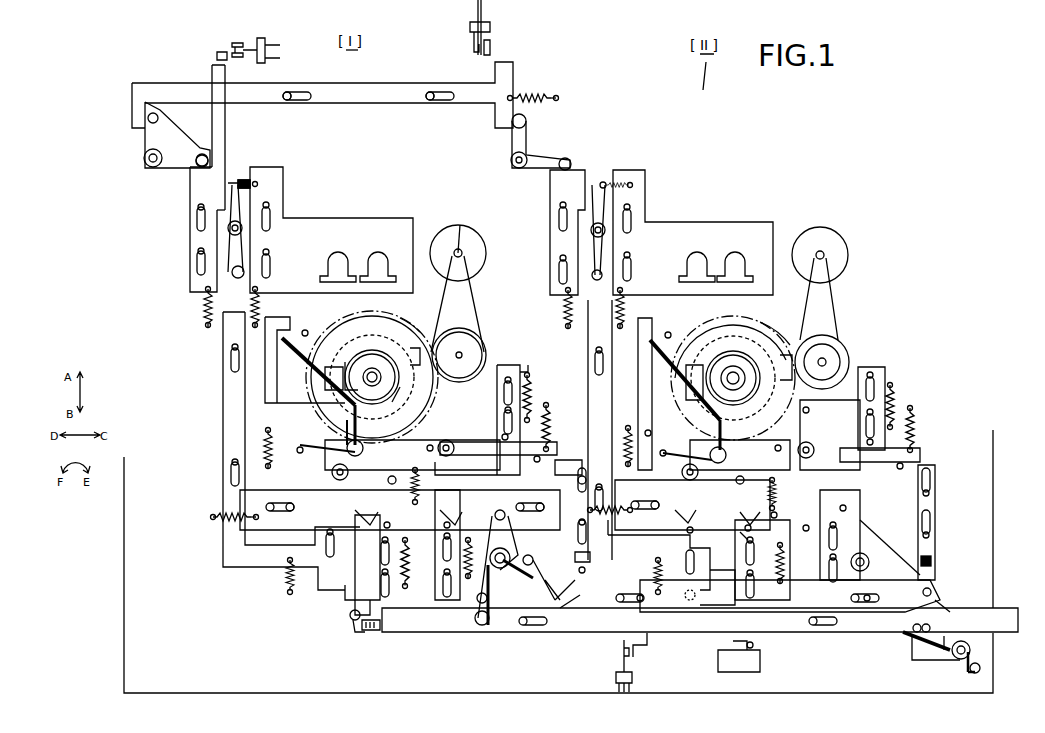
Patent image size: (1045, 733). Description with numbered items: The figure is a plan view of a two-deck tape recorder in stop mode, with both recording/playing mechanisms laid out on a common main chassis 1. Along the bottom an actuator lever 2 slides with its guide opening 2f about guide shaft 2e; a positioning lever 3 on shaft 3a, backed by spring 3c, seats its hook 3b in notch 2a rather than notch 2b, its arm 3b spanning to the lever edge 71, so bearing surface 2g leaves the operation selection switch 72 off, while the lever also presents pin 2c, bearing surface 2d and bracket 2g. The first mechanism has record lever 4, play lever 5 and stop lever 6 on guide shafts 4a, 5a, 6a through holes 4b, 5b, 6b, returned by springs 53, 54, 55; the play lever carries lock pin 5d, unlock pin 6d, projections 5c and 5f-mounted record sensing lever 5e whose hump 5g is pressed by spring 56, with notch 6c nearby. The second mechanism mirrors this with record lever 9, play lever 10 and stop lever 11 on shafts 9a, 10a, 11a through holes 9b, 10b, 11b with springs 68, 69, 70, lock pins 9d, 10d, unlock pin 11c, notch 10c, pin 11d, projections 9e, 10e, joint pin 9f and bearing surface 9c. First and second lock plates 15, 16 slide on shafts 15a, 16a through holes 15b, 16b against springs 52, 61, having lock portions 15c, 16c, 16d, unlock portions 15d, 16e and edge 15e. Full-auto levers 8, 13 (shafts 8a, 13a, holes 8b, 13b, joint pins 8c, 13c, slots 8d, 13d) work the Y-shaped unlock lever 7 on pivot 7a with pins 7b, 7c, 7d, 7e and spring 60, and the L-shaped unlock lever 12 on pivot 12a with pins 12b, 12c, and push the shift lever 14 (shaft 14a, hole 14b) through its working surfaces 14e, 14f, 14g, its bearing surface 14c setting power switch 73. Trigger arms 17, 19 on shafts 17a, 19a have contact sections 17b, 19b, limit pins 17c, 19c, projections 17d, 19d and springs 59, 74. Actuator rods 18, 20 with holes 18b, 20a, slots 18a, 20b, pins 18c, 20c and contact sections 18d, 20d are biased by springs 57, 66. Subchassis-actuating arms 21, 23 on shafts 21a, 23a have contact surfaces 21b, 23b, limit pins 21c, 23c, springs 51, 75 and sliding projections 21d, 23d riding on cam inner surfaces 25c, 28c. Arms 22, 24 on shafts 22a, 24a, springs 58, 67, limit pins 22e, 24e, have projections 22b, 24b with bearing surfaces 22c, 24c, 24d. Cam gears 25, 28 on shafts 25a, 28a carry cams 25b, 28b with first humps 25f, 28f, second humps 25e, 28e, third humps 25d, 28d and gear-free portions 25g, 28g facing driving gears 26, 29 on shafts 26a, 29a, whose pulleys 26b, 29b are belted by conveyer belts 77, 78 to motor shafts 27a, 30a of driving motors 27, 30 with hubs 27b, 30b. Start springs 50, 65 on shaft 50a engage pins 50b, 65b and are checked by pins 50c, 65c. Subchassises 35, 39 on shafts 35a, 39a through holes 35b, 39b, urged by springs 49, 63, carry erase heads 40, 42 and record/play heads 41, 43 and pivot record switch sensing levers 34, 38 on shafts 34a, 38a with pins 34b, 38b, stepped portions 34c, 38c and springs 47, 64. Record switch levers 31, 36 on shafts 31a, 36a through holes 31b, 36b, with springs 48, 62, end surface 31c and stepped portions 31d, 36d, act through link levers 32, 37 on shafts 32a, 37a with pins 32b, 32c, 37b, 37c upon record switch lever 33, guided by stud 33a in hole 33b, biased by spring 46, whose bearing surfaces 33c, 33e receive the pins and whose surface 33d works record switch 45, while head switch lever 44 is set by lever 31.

The frame 1 is at (993, 497).
The slide bar 2 is at (1010, 608).
The pin 2a is at (922, 625).
The pin 2b is at (930, 625).
The roller 2c is at (482, 625).
The pin 2d is at (356, 622).
The pin 2e is at (524, 625).
The slot 2f is at (543, 625).
The bracket 2g is at (647, 642).
The lever bracket 3 is at (930, 660).
The roller 3a is at (958, 658).
The arm 3b is at (913, 656).
The pin 3c is at (981, 666).
The slide plate 4 is at (223, 421).
The pin 4a is at (330, 530).
The slot 4b is at (231, 359).
The slide plate 5 is at (400, 590).
The pin 5a is at (371, 552).
The slot 5b is at (372, 567).
The projection 5c is at (363, 579).
The pin 5d is at (384, 525).
The arm 5e is at (345, 596).
The projection 5f is at (362, 556).
The arm 5g is at (355, 610).
The slide plate 6 is at (440, 600).
The pin 6a is at (444, 535).
The slot 6b is at (443, 548).
The notch 6c is at (680, 519).
The pin 6d is at (451, 525).
The lever 7 is at (498, 572).
The pivot 7a is at (511, 559).
The pin 7b is at (491, 516).
The roller 7c is at (478, 602).
The pin 7d is at (534, 552).
The arm 7e is at (554, 580).
The bracket 8 is at (566, 460).
The pin 8a is at (573, 504).
The slot 8b is at (573, 509).
The pin 8c is at (575, 573).
The block 8d is at (576, 559).
The slide plate 9 is at (606, 378).
The pin 9a is at (595, 350).
The slot 9b is at (595, 364).
The end 9c is at (590, 288).
The arm 9d is at (690, 526).
The arm 9e is at (717, 587).
The pin 9f is at (690, 600).
The slide plate 10 is at (735, 590).
The pin 10a is at (765, 548).
The slot 10b is at (746, 556).
The notch 10c is at (748, 525).
The pin 10d is at (731, 535).
The projection 10e is at (726, 548).
The slide plate 11 is at (840, 531).
The pin 11a is at (838, 524).
The slot 11b is at (829, 574).
The notch 11c is at (871, 498).
The pin 11d is at (803, 528).
The lever 12 is at (890, 547).
The pivot 12a is at (872, 556).
The pin 12b is at (843, 516).
The end 12c is at (918, 555).
The slide plate 13 is at (936, 512).
The pin 13a is at (930, 493).
The slot 13b is at (931, 478).
The pin 13c is at (932, 588).
The block 13d is at (932, 560).
The slide plate 14 is at (900, 600).
The pin 14a is at (640, 594).
The slot 14b is at (618, 594).
The pin 14c is at (755, 645).
The arm 14e is at (558, 599).
The arm 14f is at (950, 594).
The edge 14g is at (705, 600).
The slide plate 15 is at (483, 505).
The pin 15a is at (293, 503).
The slot 15b is at (272, 503).
The notch 15c is at (364, 514).
The notch 15d is at (436, 517).
The edge 15e is at (509, 487).
The slide plate 16 is at (698, 503).
The pin 16a is at (658, 500).
The slot 16b is at (640, 500).
The notch 16c is at (675, 522).
The notch 16d is at (740, 514).
The pin 16e is at (787, 519).
The slide plate 17 is at (396, 470).
The roller 17a is at (345, 478).
The pin 17b is at (381, 484).
The pin 17c is at (423, 453).
The arm 17d is at (328, 367).
The slide plate 18 is at (500, 365).
The pin 18a is at (509, 376).
The slot 18b is at (504, 392).
The pin 18c is at (501, 437).
The arm 18d is at (455, 452).
The slide plate 19 is at (742, 470).
The roller 19a is at (682, 472).
The pin 19b is at (731, 485).
The pin 19c is at (774, 453).
The arm 19d is at (696, 369).
The slide plate 20 is at (906, 367).
The pin 20a is at (874, 373).
The slot 20b is at (866, 424).
The pin 20c is at (866, 443).
The base 20d is at (840, 458).
The lever 21 is at (290, 415).
The arm 21a is at (471, 405).
The end 21b is at (300, 315).
The link 21c is at (316, 445).
The arm 21d is at (353, 431).
The slide plate 22 is at (470, 455).
The roller 22a is at (442, 453).
The arm 22b is at (432, 390).
The notch 22c is at (415, 351).
The pin 22e is at (537, 466).
The lever 23 is at (652, 395).
The arm 23a is at (837, 405).
The end 23b is at (640, 320).
The pin 23c is at (661, 432).
The arm 23d is at (746, 415).
The slide plate 24 is at (830, 436).
The roller 24a is at (816, 445).
The pin 24b is at (811, 403).
The notch 24c is at (785, 367).
The arm 24d is at (761, 393).
The pin 24e is at (897, 474).
The cam disc 25 is at (408, 318).
The hub 25a is at (372, 377).
The cam ring 25b is at (372, 352).
The cam 25c is at (372, 376).
The cam 25d is at (343, 371).
The cam 25e is at (403, 340).
The cam 25f is at (402, 440).
The cam edge 25g is at (425, 340).
The pulley 26 is at (484, 348).
The pulley shaft 26a is at (462, 353).
The pulley rim 26b is at (474, 345).
The pulley 27 is at (486, 256).
The shaft 27a is at (472, 229).
The hub 27b is at (464, 253).
The cam disc 28 is at (775, 325).
The hub 28a is at (737, 376).
The cam ring 28b is at (740, 352).
The cam 28c is at (737, 363).
The cam 28d is at (733, 378).
The cam 28e is at (756, 345).
The cam 28f is at (790, 415).
The cam edge 28g is at (788, 342).
The pulley 29 is at (849, 360).
The shaft 29a is at (824, 358).
The pulley rim 29b is at (838, 352).
The pulley 30 is at (848, 255).
The shaft 30a is at (822, 251).
The hub 30b is at (838, 240).
The slide bar 31 is at (226, 127).
The pin 31a is at (198, 207).
The slot 31b is at (197, 222).
The end 31c is at (215, 65).
The step 31d is at (218, 210).
The lever 32 is at (177, 150).
The pivot 32a is at (148, 166).
The pin 32b is at (159, 116).
The roller 32c is at (203, 154).
The slide bar 33 is at (132, 90).
The pin 33a is at (287, 100).
The slot 33b is at (305, 100).
The end 33c is at (132, 118).
The end block 33d is at (510, 62).
The edge 33e is at (500, 118).
The lever 34 is at (243, 240).
The pivot 34a is at (228, 229).
The roller 34b is at (244, 275).
The pin 34c is at (243, 179).
The head plate 35 is at (356, 218).
The pin 35a is at (270, 205).
The slot 35b is at (271, 224).
The plate 36 is at (581, 218).
The pin 36a is at (560, 205).
The slot 36b is at (559, 224).
The step 36d is at (578, 210).
The lever 37 is at (528, 150).
The pivot 37a is at (515, 168).
The pin 37b is at (527, 121).
The roller 37c is at (567, 158).
The lever 38 is at (598, 230).
The pivot 38a is at (591, 232).
The roller 38b is at (601, 270).
The pin 38c is at (598, 179).
The head plate 39 is at (722, 222).
The pin 39a is at (631, 207).
The slot 39b is at (632, 216).
The magnetic head 40 is at (338, 255).
The magnetic head 41 is at (378, 255).
The magnetic head 42 is at (697, 255).
The magnetic head 43 is at (735, 255).
The switch 44 is at (268, 50).
The switch 45 is at (490, 27).
The spring 46 is at (535, 95).
The pin 47 is at (256, 182).
The spring 48 is at (205, 310).
The spring 49 is at (259, 307).
The lever 50 is at (318, 361).
The pivot 50a is at (366, 433).
The pin 50b is at (309, 462).
The pin 50c is at (308, 331).
The spring 51 is at (272, 455).
The spring 52 is at (225, 520).
The spring 53 is at (287, 577).
The spring 54 is at (414, 563).
The spring 55 is at (468, 558).
The switch 56 is at (372, 630).
The spring 57 is at (531, 399).
The spring 58 is at (550, 428).
The spring 59 is at (423, 486).
The lever 60 is at (490, 602).
The spring 61 is at (610, 503).
The spring 62 is at (565, 306).
The spring 63 is at (624, 305).
The spring 64 is at (625, 183).
The lever 65 is at (660, 350).
The link 65b is at (676, 458).
The pin 65c is at (672, 333).
The spring 66 is at (896, 398).
The spring 67 is at (914, 425).
The spring 68 is at (660, 594).
The spring 69 is at (780, 563).
The spring 70 is at (833, 578).
The lever 71 is at (905, 636).
The switch 72 is at (634, 679).
The switch 73 is at (752, 666).
The spring 74 is at (780, 494).
The spring 75 is at (626, 448).
The belt 77 is at (472, 300).
The belt 78 is at (835, 300).